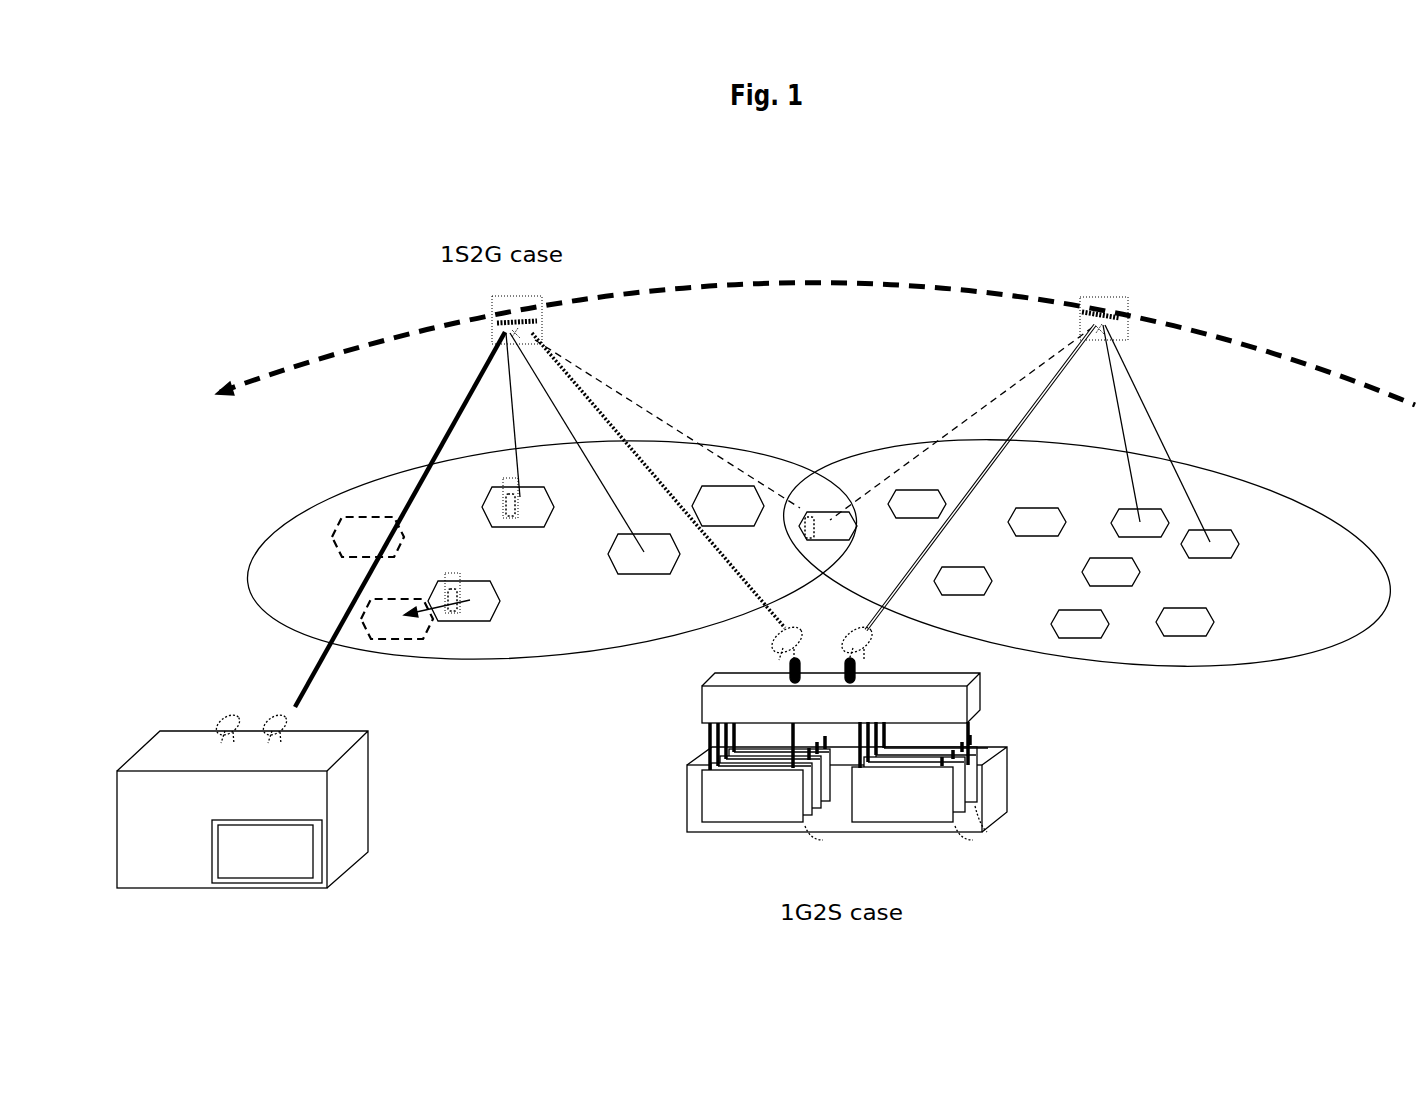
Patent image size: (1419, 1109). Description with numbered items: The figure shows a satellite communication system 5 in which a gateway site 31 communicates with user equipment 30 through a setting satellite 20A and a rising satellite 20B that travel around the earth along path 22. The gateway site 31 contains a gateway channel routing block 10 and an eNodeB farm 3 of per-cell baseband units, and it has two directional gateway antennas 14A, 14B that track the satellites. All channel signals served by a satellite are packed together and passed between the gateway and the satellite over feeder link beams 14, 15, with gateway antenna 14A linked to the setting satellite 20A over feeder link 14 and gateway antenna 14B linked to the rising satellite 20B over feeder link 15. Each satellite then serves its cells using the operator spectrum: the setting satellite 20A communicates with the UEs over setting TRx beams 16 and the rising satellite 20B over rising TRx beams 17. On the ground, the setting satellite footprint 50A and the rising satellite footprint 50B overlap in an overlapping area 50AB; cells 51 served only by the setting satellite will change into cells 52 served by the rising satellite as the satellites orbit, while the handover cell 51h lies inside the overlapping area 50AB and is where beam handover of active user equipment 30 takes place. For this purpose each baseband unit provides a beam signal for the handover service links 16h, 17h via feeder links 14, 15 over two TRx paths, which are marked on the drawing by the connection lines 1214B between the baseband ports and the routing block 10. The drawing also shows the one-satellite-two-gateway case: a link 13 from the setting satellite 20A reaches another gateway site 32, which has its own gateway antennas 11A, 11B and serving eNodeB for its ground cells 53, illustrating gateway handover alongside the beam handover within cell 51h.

The satellite communication system 5 is at (270, 274).
The path 22 is at (1232, 341).
The setting satellite 20A is at (542, 321).
The rising satellite 20B is at (1122, 306).
The feeder link to another GW site 13 is at (303, 687).
The setting TRx beams 16 is at (575, 442).
The feeder link beam 14 is at (738, 592).
The HO service link beam 16h is at (738, 462).
The HO service link beam 17h is at (902, 465).
The rising TRx beams 17 is at (1156, 433).
The feeder link beam 15 is at (903, 585).
The setting satellite FoV 50A is at (288, 631).
The rising satellite FoV 50B is at (1318, 522).
The overlapping area 50AB is at (815, 460).
The non-overlapping cells 51 is at (596, 553).
The ground cells 53 is at (392, 578).
The beam handover cell 51h is at (828, 518).
The non-overlapping cells 52 is at (1236, 548).
The user equipment 30 is at (503, 491).
The gateway antenna 14A is at (783, 656).
The gateway antenna 14B is at (878, 655).
The gateway channel routing block 10 is at (700, 706).
The eNodeB farm 3 is at (687, 832).
The TRx connection lines 1214B is at (719, 750).
The gateway site 31 is at (1036, 835).
The gateway site 32 is at (360, 874).
The gateway antenna 11A is at (217, 722).
The gateway antenna 11B is at (292, 729).